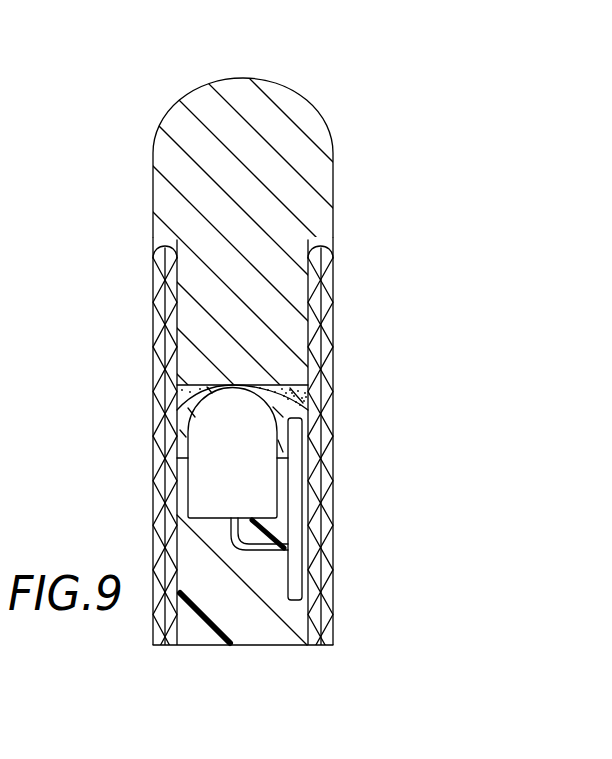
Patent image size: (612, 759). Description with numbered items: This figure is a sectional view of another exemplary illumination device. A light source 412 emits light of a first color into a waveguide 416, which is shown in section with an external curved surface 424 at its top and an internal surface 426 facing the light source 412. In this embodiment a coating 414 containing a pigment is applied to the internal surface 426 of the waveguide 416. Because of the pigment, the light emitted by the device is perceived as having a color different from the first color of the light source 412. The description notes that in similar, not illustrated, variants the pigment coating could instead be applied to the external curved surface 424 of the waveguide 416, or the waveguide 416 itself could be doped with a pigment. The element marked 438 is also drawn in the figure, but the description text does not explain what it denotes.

The external curved surface 424 is at (305, 102).
The waveguide 416 is at (323, 157).
The internal surface 426 is at (303, 372).
The coating 414 is at (305, 400).
The light source 412 is at (192, 447).
The conductor 438 is at (223, 618).